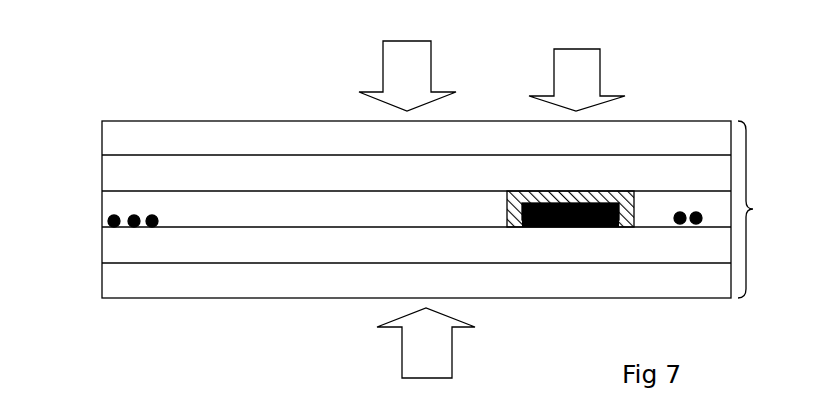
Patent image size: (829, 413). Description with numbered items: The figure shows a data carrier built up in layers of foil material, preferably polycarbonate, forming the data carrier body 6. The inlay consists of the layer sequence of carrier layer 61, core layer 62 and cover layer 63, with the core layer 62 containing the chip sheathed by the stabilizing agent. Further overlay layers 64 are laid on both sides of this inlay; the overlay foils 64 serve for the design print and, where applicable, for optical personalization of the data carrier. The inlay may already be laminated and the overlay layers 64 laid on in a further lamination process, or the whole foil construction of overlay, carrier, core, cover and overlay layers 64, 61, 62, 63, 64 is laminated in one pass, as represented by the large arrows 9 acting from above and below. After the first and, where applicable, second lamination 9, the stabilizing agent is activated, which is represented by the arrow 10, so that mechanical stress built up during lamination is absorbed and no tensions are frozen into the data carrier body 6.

The data carrier body 6 is at (437, 209).
The overlay layers 64 is at (103, 140).
The cover layer 63 is at (103, 177).
The core layer 62 is at (103, 218).
The carrier layer 61 is at (103, 248).
The lamination 9 is at (383, 71).
The activation of the stabilizing agent 10 is at (562, 89).